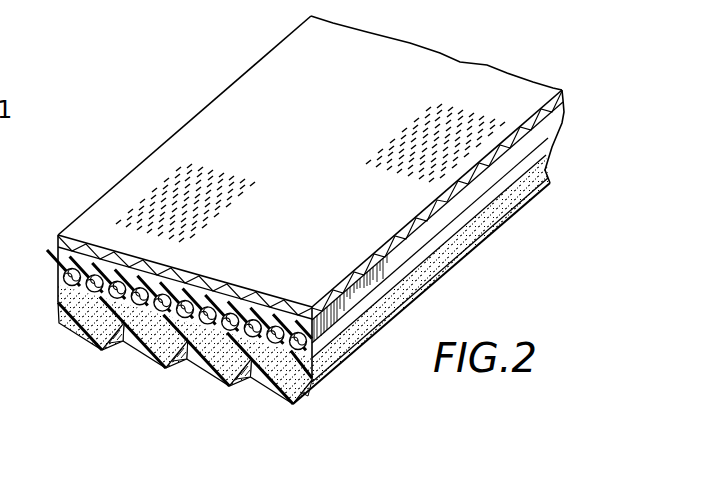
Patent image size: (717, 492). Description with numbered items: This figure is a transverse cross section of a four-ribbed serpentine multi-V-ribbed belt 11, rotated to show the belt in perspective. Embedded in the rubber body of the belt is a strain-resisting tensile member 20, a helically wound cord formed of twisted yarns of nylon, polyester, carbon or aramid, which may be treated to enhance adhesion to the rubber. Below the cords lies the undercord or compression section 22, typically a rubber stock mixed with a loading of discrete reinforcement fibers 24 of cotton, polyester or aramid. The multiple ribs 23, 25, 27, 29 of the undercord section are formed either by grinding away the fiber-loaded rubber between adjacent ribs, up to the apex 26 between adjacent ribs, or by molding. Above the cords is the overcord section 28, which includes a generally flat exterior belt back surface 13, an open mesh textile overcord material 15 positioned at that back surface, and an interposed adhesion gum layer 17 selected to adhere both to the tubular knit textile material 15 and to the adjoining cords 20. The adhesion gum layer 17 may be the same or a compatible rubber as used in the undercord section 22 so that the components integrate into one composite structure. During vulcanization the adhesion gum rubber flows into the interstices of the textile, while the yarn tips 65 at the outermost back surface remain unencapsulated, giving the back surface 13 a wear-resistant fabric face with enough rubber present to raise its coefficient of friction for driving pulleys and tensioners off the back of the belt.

The panel assembly 11 is at (498, 61).
The exterior belt back surface 13 is at (241, 118).
The open mesh textile overcord material 15 is at (58, 238).
The adhesion gum layer 17 is at (58, 258).
The strain-resisting tensile member 20 is at (60, 289).
The undercord or compression section 22 is at (569, 137).
The rib 23 is at (94, 348).
The discrete reinforcement fibers 24 is at (312, 390).
The rib 25 is at (155, 368).
The apex between adjacent ribs 26 is at (248, 390).
The rib 27 is at (216, 380).
The overcord section 28 is at (566, 89).
The rib 29 is at (292, 409).
The yarn tips 65 is at (244, 177).